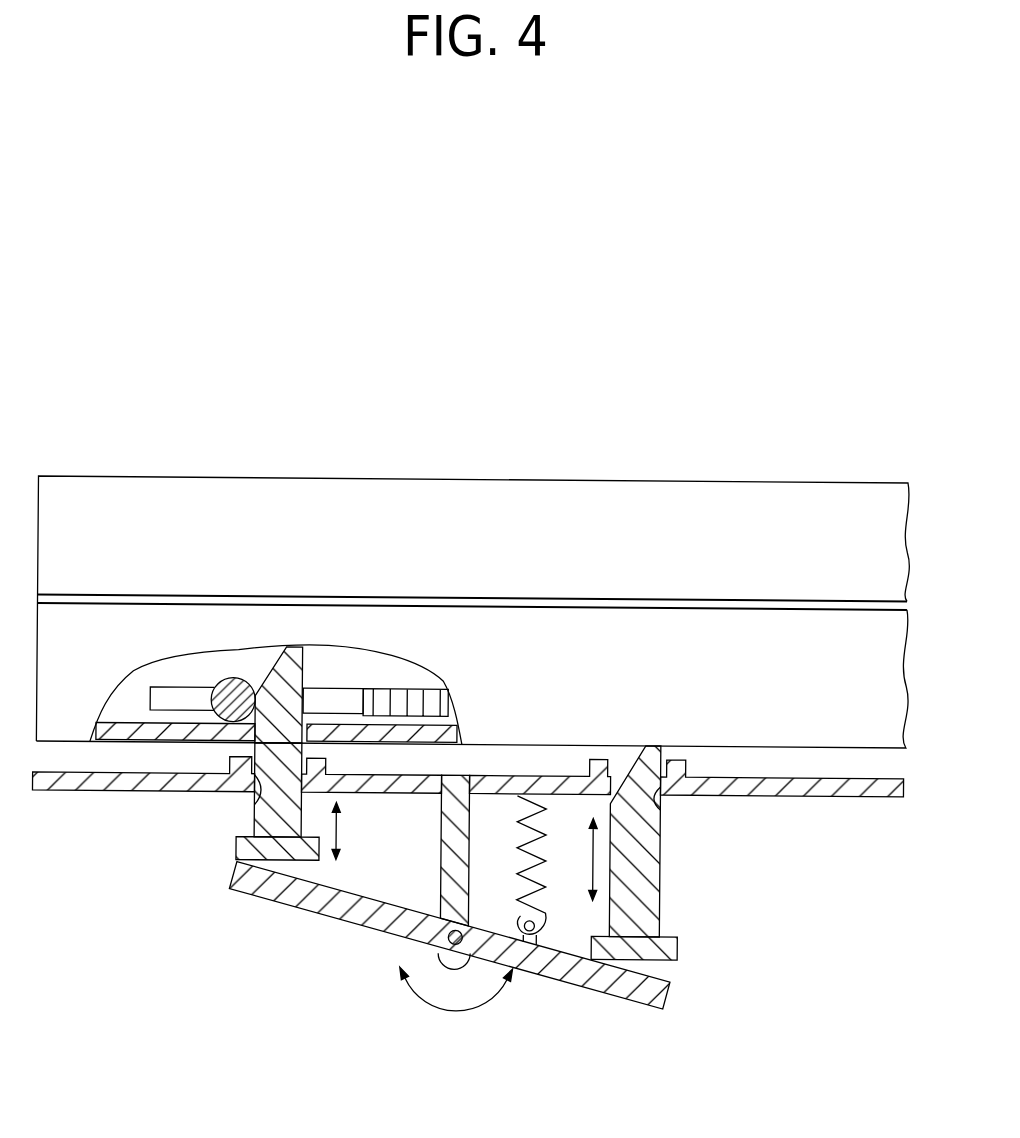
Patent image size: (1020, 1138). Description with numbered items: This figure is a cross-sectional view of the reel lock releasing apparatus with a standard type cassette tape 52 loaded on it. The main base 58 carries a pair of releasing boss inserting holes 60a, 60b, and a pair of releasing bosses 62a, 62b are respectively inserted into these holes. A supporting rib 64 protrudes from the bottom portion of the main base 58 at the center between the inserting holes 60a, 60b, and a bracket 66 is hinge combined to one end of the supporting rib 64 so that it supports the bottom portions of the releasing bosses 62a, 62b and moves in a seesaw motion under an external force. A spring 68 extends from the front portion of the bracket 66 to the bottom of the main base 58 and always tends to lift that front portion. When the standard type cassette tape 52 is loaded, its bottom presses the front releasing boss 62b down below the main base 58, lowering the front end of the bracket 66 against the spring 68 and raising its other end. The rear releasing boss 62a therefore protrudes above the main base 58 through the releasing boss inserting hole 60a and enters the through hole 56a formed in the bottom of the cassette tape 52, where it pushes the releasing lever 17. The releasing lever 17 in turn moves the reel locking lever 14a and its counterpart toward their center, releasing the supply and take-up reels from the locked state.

The releasing lever 17 is at (227, 678).
The through hole 56a is at (266, 692).
The reel locking lever 14a is at (320, 686).
The standard type cassette tape 52 is at (493, 476).
The main base 58 is at (858, 791).
The releasing boss inserting hole 60a is at (262, 795).
The releasing boss inserting hole 60b is at (663, 808).
The releasing boss 62a is at (241, 851).
The releasing boss 62b is at (663, 884).
The supporting rib 64 is at (443, 847).
The bracket 66 is at (672, 992).
The spring 68 is at (546, 876).